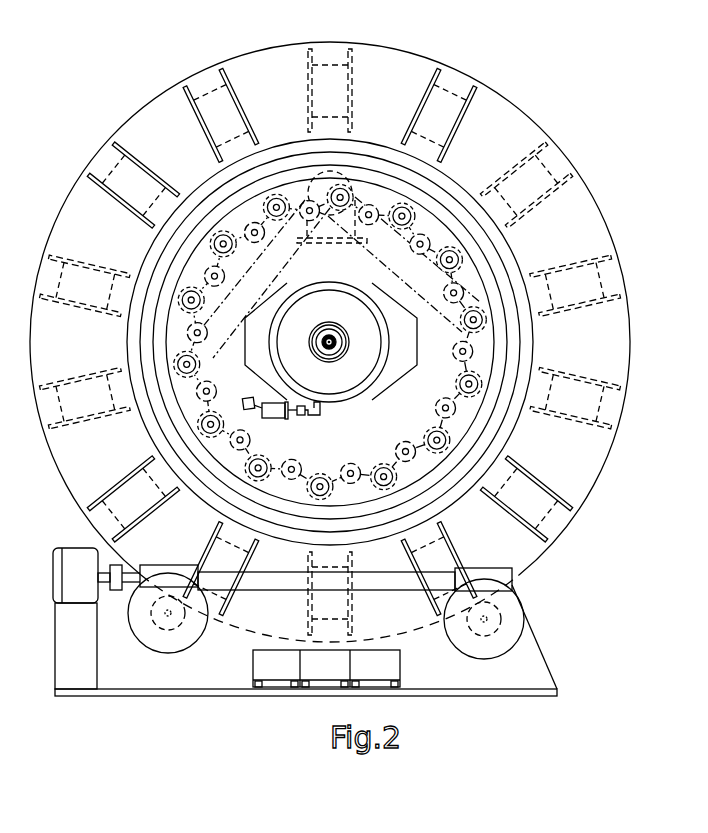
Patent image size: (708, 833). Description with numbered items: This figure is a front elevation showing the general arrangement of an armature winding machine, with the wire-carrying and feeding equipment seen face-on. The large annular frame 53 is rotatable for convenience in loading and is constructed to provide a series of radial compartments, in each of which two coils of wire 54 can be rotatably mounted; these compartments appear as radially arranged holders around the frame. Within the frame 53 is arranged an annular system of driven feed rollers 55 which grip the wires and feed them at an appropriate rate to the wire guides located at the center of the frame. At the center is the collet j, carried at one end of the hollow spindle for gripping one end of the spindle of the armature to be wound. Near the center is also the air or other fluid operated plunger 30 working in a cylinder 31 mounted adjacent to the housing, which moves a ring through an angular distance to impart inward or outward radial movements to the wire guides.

The annular frame 53 is at (587, 202).
The coils of wire 54 is at (210, 137).
The driven feed rollers 55 is at (398, 227).
The collet j is at (338, 339).
The plunger 30 is at (311, 413).
The cylinder 31 is at (274, 416).